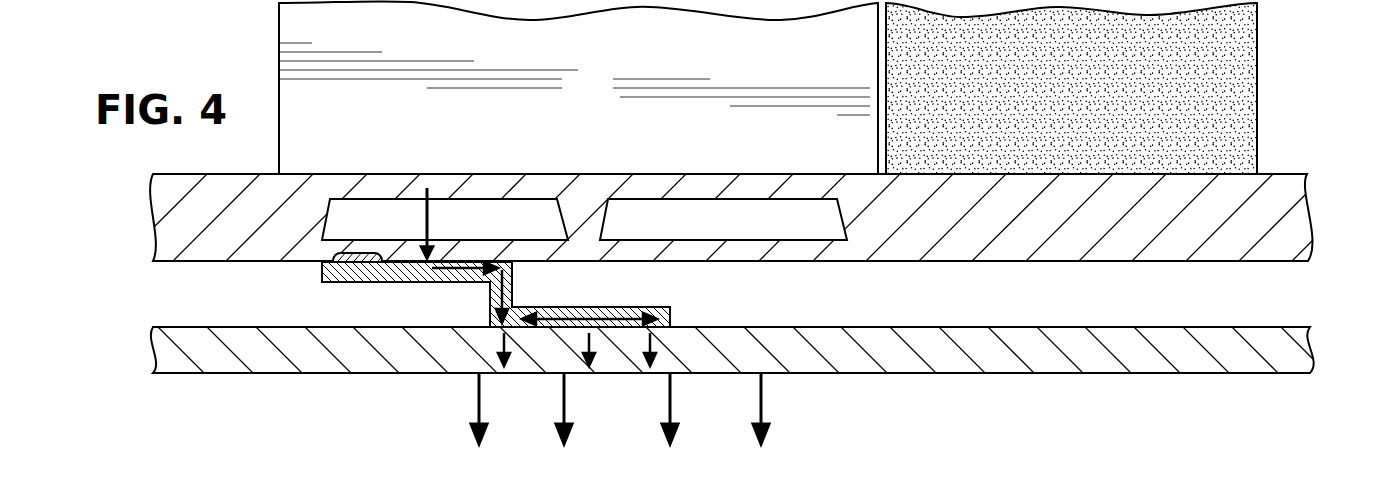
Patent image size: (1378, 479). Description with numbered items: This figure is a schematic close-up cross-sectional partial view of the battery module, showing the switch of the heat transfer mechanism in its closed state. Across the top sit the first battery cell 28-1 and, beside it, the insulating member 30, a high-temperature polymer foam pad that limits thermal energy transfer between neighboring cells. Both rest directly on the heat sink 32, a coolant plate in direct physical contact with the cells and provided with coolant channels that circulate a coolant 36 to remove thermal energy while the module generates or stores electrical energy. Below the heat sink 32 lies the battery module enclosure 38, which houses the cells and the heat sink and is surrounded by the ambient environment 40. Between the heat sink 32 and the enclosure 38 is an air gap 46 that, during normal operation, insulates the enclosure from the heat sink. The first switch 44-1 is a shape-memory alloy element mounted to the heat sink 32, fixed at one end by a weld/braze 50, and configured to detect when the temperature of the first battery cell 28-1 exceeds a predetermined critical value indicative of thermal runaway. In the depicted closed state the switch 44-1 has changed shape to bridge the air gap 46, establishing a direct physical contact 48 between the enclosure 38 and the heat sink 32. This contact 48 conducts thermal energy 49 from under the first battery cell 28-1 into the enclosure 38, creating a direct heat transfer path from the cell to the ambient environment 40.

The first battery cell 28-1 is at (612, 98).
The insulating member 30 is at (1081, 91).
The heat sink 32 is at (1303, 215).
The coolant 36 is at (468, 216).
The battery module enclosure 38 is at (1303, 350).
The ambient environment 40 is at (964, 422).
The first switch 44-1 is at (653, 306).
The air gap 46 is at (1184, 306).
The direct physical contact 48 is at (684, 318).
The thermal energy 49 is at (566, 393).
The weld/braze 50 is at (369, 256).